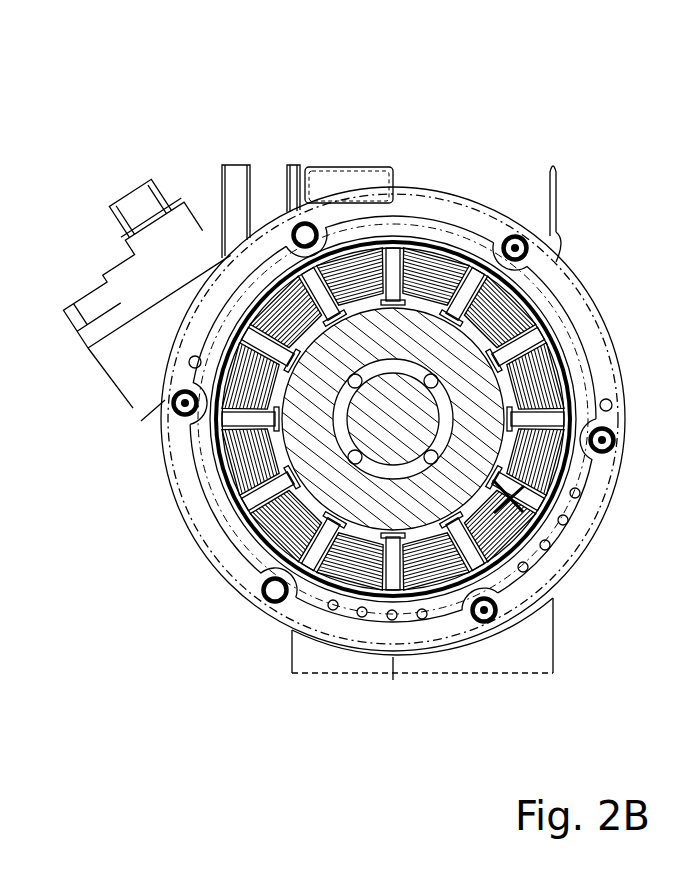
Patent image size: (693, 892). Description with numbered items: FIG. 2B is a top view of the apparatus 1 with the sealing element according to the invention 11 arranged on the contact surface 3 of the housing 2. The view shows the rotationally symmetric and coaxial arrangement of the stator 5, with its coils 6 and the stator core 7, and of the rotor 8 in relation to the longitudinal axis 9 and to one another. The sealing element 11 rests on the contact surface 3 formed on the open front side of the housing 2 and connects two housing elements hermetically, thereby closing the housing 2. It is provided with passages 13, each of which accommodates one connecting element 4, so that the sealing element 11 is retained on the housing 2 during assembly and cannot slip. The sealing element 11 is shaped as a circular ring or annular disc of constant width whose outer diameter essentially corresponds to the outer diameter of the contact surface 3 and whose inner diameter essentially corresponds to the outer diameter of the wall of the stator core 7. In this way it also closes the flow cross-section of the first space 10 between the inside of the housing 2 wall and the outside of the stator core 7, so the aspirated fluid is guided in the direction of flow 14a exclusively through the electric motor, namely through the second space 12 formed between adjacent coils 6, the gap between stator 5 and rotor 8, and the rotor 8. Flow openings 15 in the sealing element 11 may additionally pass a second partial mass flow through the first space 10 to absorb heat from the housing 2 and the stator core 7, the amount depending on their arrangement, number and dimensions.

The apparatus 1 is at (393, 333).
The housing 2 is at (253, 178).
The contact surface 3 is at (455, 205).
The connecting element 4 is at (363, 438).
The passage 13 is at (515, 248).
The stator 5 is at (525, 345).
The coil 6 is at (325, 552).
The stator core 7 is at (325, 581).
The rotor 8 is at (445, 355).
The longitudinal axis 9 is at (402, 428).
The first space 10 is at (392, 215).
The sealing element 11 is at (267, 262).
The second space 12 is at (405, 270).
The direction of flow 14a is at (543, 518).
The flow opening 15 is at (568, 520).